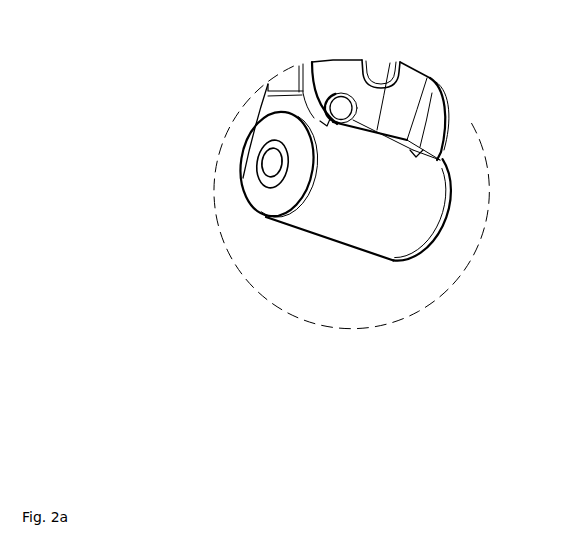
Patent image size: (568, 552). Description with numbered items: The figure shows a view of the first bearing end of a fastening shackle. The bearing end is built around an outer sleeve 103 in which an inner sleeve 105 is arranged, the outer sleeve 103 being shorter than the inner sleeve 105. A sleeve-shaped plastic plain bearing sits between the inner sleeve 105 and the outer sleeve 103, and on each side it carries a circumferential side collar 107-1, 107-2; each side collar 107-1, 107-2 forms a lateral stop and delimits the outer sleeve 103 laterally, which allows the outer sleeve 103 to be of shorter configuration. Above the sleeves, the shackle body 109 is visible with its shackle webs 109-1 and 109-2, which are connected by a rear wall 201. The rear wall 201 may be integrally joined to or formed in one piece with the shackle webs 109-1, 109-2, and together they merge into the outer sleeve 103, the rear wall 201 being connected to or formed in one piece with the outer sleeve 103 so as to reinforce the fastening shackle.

The outer sleeve 103 is at (343, 223).
The inner sleeve 105 is at (258, 177).
The circumferential side collar 107-1 is at (253, 203).
The circumferential side collar 107-2 is at (447, 223).
The shackle body 109 is at (418, 99).
The shackle web 109-1 is at (270, 101).
The shackle web 109-2 is at (428, 146).
The rear wall 201 is at (348, 65).